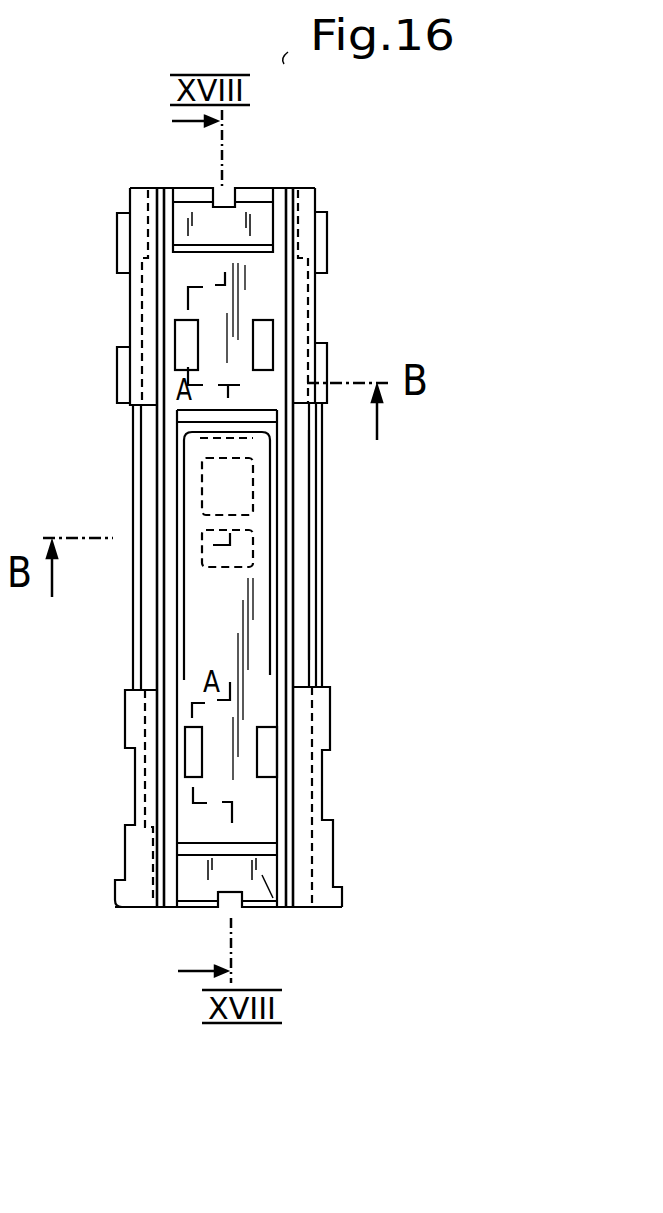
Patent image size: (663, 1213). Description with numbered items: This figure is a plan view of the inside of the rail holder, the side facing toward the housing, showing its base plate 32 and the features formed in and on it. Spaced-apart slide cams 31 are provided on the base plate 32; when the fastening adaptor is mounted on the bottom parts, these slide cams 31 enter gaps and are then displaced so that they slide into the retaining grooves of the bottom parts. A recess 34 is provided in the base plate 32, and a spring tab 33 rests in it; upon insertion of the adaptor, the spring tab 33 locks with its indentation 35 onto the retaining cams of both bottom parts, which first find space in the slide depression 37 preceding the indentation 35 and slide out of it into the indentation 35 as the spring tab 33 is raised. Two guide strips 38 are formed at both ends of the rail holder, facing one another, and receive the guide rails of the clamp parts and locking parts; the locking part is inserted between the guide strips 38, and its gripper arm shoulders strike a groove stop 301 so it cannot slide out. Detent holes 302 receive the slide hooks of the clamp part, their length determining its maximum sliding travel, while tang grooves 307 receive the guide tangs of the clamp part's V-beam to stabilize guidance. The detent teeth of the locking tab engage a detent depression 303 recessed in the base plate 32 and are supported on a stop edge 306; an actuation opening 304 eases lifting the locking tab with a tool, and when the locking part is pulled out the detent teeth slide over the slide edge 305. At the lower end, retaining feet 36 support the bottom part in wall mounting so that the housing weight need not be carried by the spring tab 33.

The slide cams 31 is at (322, 245).
The base plate 32 is at (215, 297).
The spring tab 33 is at (258, 469).
The recess 34 is at (258, 424).
The indentation 35 is at (243, 540).
The retaining feet 36 is at (123, 888).
The slide depression 37 is at (223, 477).
The guide strips 38 is at (138, 209).
The groove stop 301 is at (307, 833).
The detent holes 302 is at (258, 345).
The detent depression 303 is at (273, 908).
The actuation opening 304 is at (232, 902).
The slide edge 305 is at (265, 849).
The stop edge 306 is at (200, 885).
The tang grooves 307 is at (307, 593).